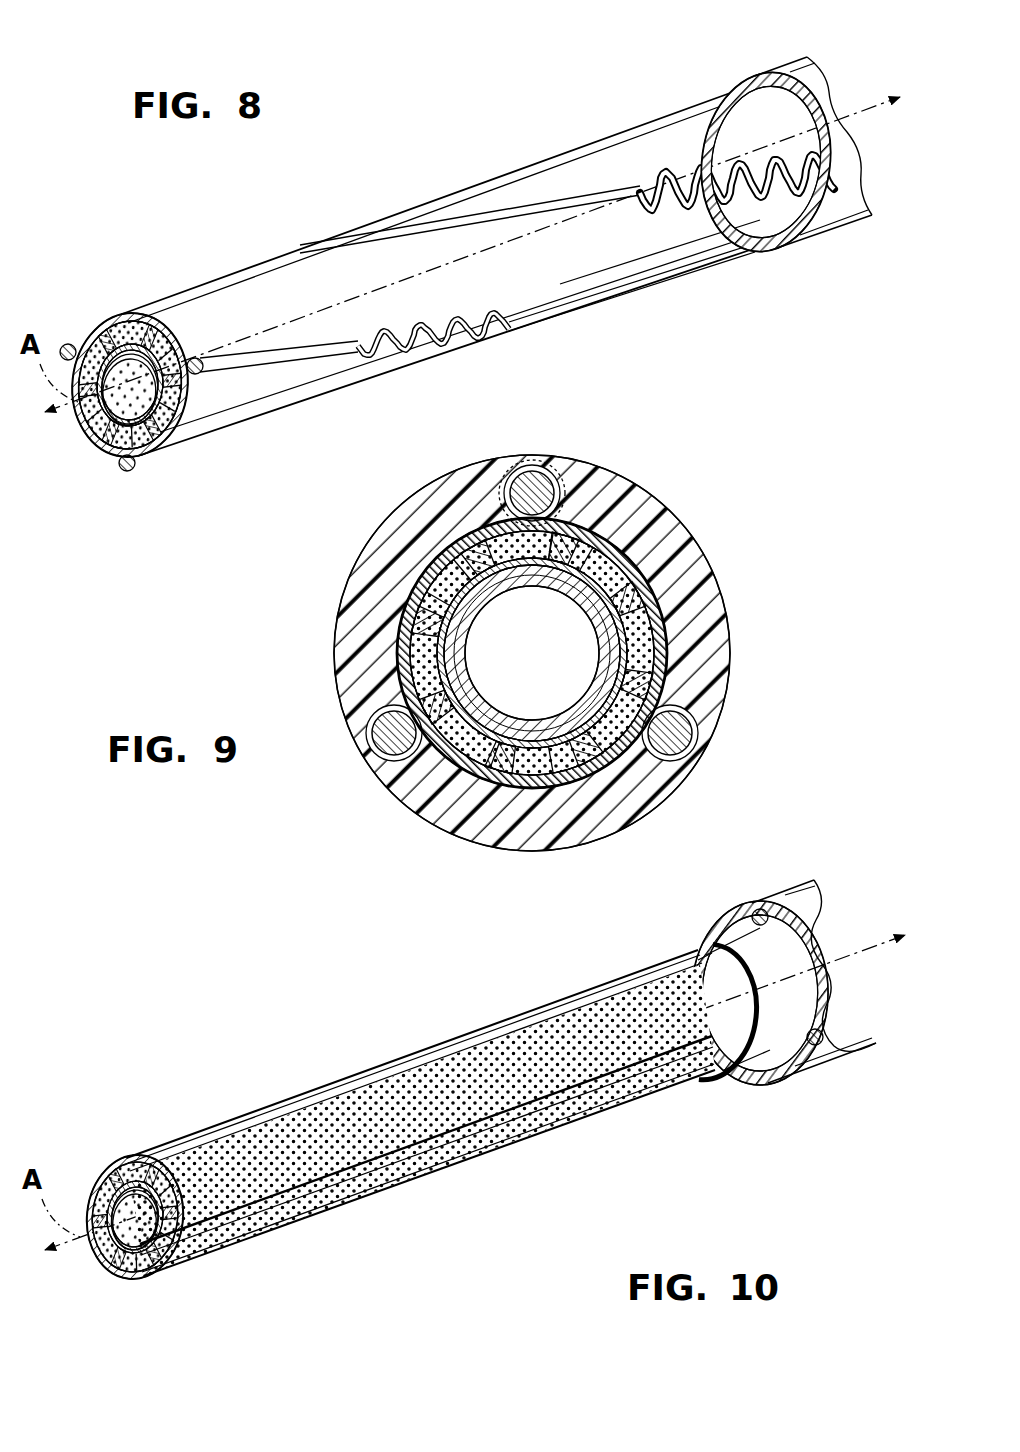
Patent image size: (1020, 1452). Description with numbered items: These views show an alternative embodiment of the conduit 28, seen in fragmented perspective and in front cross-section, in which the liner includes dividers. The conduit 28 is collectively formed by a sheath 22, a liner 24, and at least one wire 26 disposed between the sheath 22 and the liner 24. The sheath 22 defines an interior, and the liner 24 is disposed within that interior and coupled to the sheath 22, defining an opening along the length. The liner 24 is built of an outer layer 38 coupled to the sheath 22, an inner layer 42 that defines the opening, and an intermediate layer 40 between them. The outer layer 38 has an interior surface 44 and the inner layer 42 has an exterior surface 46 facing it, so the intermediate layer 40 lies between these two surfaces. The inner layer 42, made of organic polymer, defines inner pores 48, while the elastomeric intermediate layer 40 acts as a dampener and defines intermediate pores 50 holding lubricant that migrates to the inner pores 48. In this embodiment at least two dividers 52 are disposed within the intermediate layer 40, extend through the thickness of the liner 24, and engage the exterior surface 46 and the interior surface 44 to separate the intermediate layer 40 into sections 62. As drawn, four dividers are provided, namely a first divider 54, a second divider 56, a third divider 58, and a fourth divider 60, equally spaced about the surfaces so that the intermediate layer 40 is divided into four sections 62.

In FIG. 8, the sheath 22 is at (762, 72).
In FIG. 9, the sheath 22 is at (712, 640).
In FIG. 10, the sheath 22 is at (852, 1042).
In FIG. 8, the liner 24 is at (714, 252).
In FIG. 8, the wire 26 is at (490, 210).
In FIG. 9, the wire 26 is at (533, 482).
In FIG. 8, the conduit 28 is at (575, 106).
In FIG. 9, the conduit 28 is at (760, 512).
In FIG. 10, the conduit 28 is at (878, 868).
In FIG. 8, the outer layer 38 is at (663, 237).
In FIG. 9, the outer layer 38 is at (660, 562).
In FIG. 10, the outer layer 38 is at (770, 1038).
In FIG. 8, the intermediate layer 40 is at (176, 432).
In FIG. 9, the intermediate layer 40 is at (642, 562).
In FIG. 10, the intermediate layer 40 is at (690, 1078).
In FIG. 8, the inner layer 42 is at (96, 442).
In FIG. 9, the inner layer 42 is at (602, 562).
In FIG. 9, the interior surface 44 is at (566, 502).
In FIG. 10, the interior surface 44 is at (698, 960).
In FIG. 9, the exterior surface 46 is at (575, 530).
In FIG. 10, the exterior surface 46 is at (182, 1252).
In FIG. 8, the inner pores 48 is at (160, 456).
In FIG. 9, the inner pores 48 is at (482, 802).
In FIG. 10, the inner pores 48 is at (134, 1280).
In FIG. 8, the intermediate pores 50 is at (198, 412).
In FIG. 9, the intermediate pores 50 is at (528, 812).
In FIG. 10, the intermediate pores 50 is at (494, 1144).
In FIG. 8, the dividers 52 is at (130, 320).
In FIG. 9, the dividers 52 is at (482, 545).
In FIG. 10, the dividers 52 is at (396, 1062).
In FIG. 8, the first divider 54 is at (86, 346).
In FIG. 9, the first divider 54 is at (440, 656).
In FIG. 10, the first divider 54 is at (96, 1252).
In FIG. 8, the second divider 56 is at (196, 416).
In FIG. 9, the second divider 56 is at (640, 670).
In FIG. 10, the second divider 56 is at (570, 1082).
In FIG. 8, the third divider 58 is at (116, 447).
In FIG. 9, the third divider 58 is at (556, 792).
In FIG. 10, the third divider 58 is at (152, 1278).
In FIG. 8, the fourth divider 60 is at (110, 330).
In FIG. 9, the fourth divider 60 is at (446, 562).
In FIG. 10, the fourth divider 60 is at (352, 1076).
In FIG. 8, the sections 62 is at (130, 384).
In FIG. 9, the sections 62 is at (400, 562).
In FIG. 10, the sections 62 is at (182, 1190).